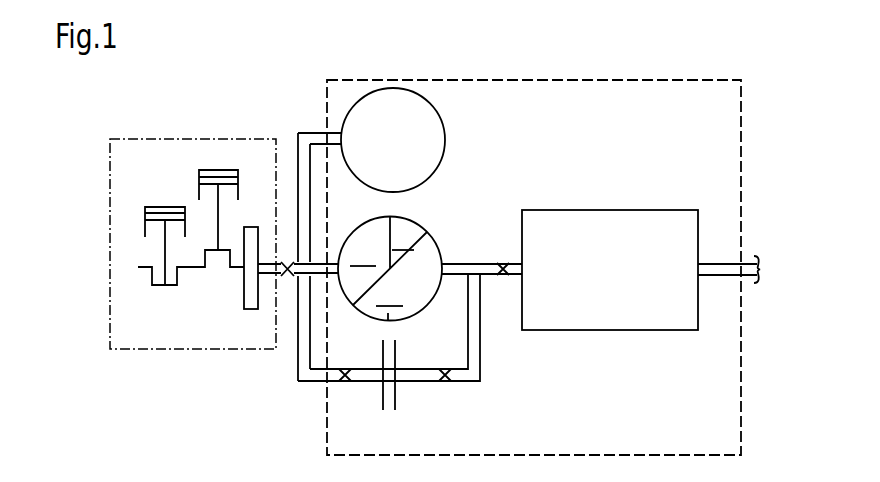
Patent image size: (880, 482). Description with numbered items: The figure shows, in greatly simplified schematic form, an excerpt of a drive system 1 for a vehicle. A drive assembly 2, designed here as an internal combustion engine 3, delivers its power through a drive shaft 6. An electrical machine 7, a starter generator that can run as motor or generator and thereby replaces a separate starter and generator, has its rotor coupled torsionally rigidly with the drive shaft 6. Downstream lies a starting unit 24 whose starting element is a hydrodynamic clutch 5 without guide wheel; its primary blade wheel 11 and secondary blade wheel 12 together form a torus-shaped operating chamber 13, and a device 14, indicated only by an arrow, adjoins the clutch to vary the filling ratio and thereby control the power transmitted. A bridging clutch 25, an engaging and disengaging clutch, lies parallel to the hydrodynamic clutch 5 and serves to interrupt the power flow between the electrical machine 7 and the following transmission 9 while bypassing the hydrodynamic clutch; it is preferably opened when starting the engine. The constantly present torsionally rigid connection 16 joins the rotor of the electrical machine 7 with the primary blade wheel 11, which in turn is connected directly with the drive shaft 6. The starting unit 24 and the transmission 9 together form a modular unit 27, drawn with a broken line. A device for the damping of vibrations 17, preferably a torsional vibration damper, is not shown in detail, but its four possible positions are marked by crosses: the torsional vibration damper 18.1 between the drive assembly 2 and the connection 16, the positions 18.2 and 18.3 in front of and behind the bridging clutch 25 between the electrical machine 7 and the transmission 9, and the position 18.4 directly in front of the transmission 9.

The drive system 1 is at (455, 76).
The drive assembly 2 is at (190, 122).
The internal combustion engine 3 is at (216, 160).
The drive shaft 6 is at (284, 261).
The electrical machine 7 is at (392, 88).
The hydrodynamic clutch 5 is at (460, 224).
The primary blade wheel 11 is at (363, 255).
The secondary blade wheel 12 is at (403, 239).
The operating chamber 13 is at (389, 294).
The device for control of the filling ratio 14 is at (438, 234).
The transmission 9 is at (643, 230).
The connection 16 is at (295, 278).
The device for the damping of vibrations 17 is at (317, 385).
The torsional vibration damper 18.1 is at (291, 261).
The torsional vibration damper arrangement 18.2 is at (343, 383).
The torsional vibration damper arrangement 18.3 is at (447, 385).
The torsional vibration damper arrangement 18.4 is at (503, 282).
The starting unit 24 is at (451, 173).
The bridging clutch 25 is at (446, 331).
The modular unit 27 is at (695, 425).